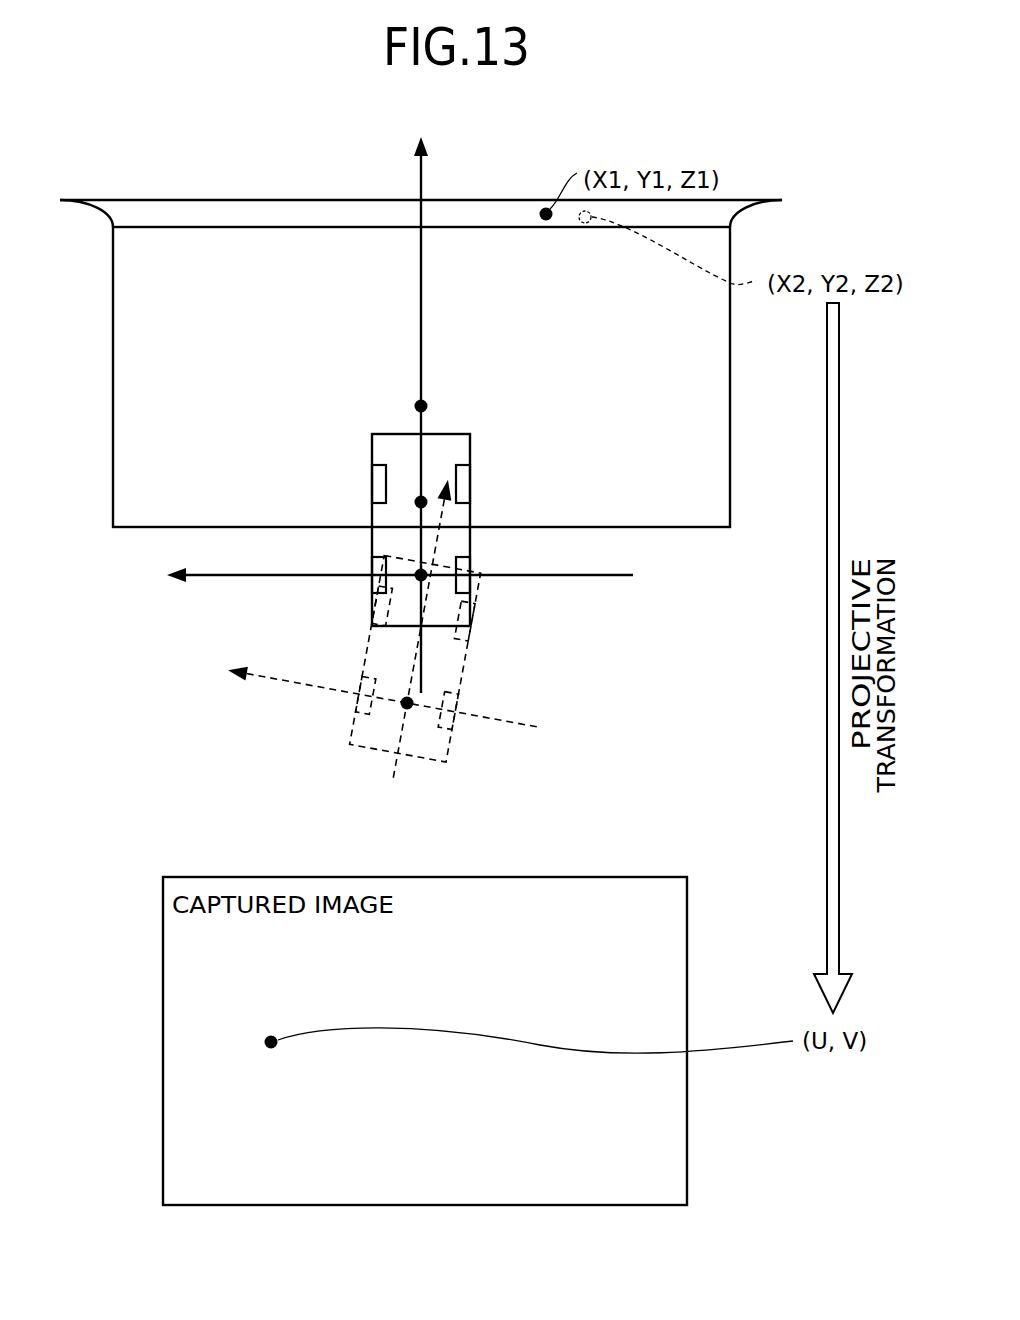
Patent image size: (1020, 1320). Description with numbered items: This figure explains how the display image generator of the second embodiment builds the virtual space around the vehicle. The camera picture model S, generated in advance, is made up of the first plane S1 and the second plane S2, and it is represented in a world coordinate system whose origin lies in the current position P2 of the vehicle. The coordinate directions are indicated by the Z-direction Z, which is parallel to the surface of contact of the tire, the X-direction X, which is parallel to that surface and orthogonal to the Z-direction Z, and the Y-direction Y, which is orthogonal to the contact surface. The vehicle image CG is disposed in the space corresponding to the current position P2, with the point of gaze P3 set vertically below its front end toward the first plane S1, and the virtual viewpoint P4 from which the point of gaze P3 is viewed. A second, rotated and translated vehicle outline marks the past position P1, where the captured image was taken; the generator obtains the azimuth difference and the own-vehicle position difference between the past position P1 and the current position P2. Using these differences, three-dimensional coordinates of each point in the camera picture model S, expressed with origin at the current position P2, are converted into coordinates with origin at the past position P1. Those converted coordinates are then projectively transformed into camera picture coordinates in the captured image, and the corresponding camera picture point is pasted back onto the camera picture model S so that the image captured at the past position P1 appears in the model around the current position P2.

The camera picture model S is at (418, 363).
The first plane S1 is at (135, 383).
The second plane S2 is at (108, 215).
The vehicle image CG is at (470, 448).
The past position P1 is at (408, 710).
The current position P2 is at (419, 571).
The point of gaze P3 is at (416, 406).
The virtual viewpoint P4 is at (416, 502).
The X-direction X is at (240, 580).
The Y-direction Y is at (447, 537).
The Z-direction Z is at (424, 170).